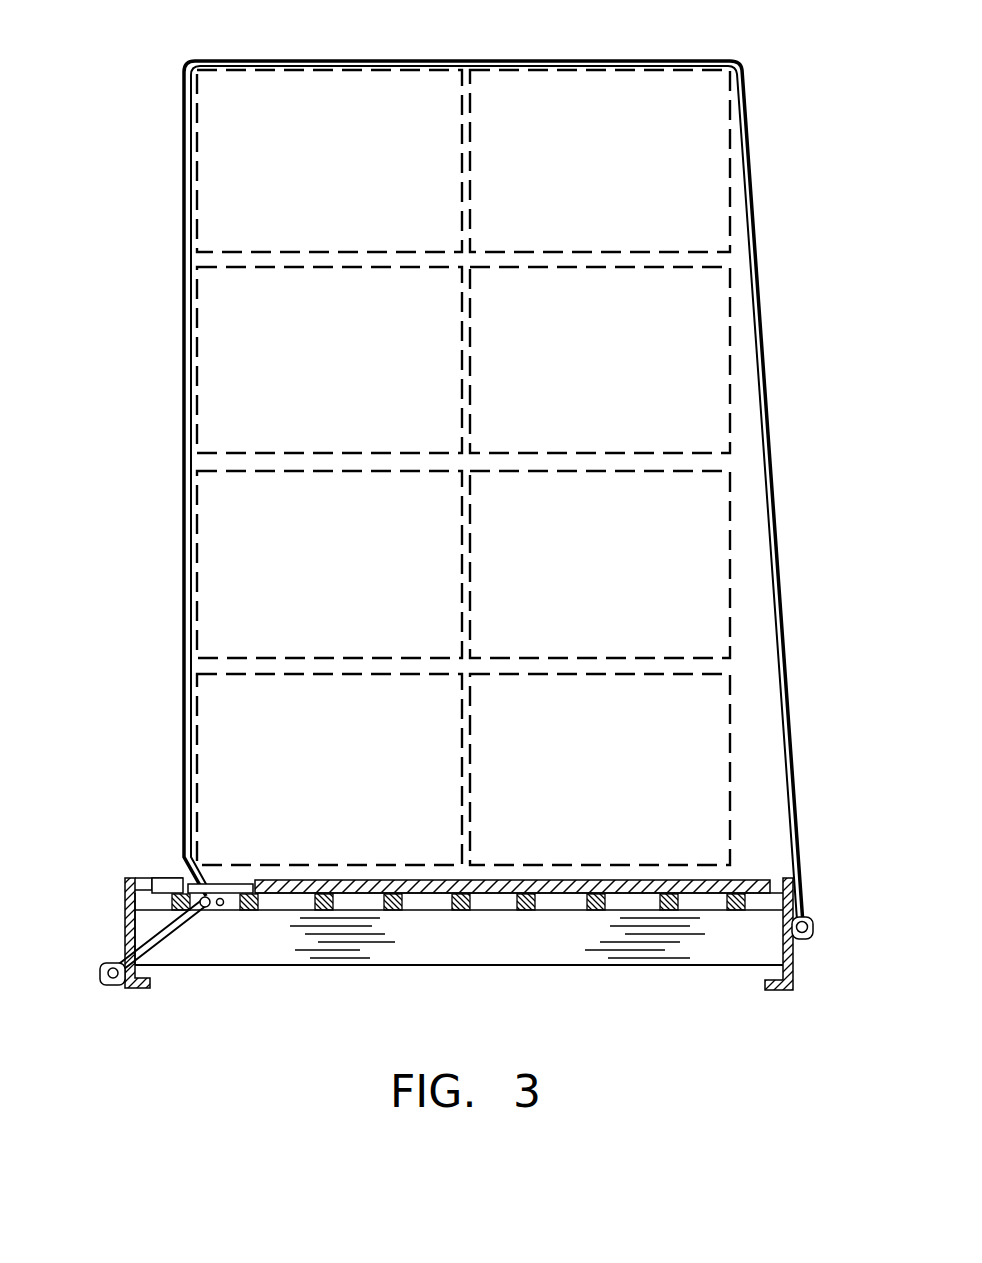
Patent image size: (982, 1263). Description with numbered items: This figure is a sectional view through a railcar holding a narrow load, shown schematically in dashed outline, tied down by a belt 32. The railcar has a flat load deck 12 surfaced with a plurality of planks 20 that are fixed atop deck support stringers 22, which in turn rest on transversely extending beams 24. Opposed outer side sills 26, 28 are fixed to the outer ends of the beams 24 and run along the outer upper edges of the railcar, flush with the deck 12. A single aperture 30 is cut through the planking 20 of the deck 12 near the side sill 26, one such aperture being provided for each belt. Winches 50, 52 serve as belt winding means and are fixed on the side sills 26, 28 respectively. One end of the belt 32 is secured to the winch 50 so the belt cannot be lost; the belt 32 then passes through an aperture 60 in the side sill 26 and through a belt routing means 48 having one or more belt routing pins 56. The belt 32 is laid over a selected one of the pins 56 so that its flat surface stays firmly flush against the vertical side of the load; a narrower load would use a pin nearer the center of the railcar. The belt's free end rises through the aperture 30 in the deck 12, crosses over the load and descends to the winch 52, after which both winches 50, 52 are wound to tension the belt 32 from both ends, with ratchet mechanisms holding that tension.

The load deck 12 is at (570, 876).
The planks 20 is at (364, 877).
The deck support stringers 22 is at (250, 913).
The transversely extending beams 24 is at (433, 967).
The side sill 26 is at (123, 915).
The side sill 28 is at (800, 953).
The aperture 30 is at (163, 875).
The belt 32 is at (421, 60).
The belt routing means 48 is at (238, 928).
The winch 50 is at (110, 990).
The winch 52 is at (816, 919).
The belt routing pins 56 is at (220, 897).
The aperture 60 is at (123, 947).